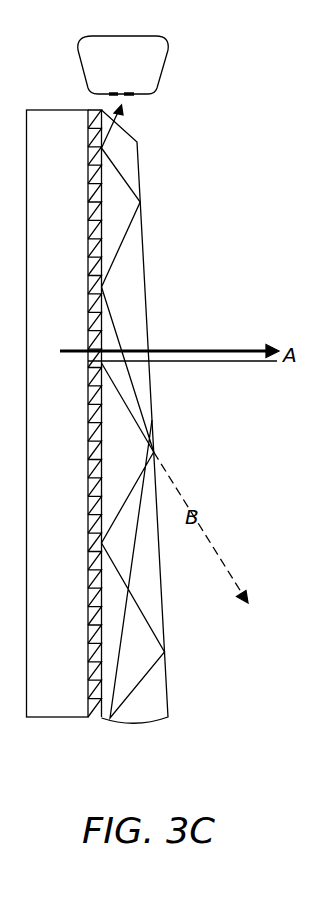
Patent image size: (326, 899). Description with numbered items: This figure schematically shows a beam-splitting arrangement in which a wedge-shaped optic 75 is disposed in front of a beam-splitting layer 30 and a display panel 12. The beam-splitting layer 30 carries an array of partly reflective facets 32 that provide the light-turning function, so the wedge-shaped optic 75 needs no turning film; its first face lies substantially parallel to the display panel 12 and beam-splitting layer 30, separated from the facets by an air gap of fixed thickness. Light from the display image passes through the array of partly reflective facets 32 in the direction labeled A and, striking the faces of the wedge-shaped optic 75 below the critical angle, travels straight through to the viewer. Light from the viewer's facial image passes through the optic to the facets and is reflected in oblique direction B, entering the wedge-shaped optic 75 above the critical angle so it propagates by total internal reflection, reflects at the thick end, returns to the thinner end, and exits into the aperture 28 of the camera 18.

The display panel 12 is at (48, 424).
The camera 18 is at (116, 74).
The aperture 28 is at (122, 98).
The beam-splitting layer 30 is at (96, 727).
The array of partly reflective facets 32 is at (97, 407).
The wedge-shaped optic 75 is at (132, 727).